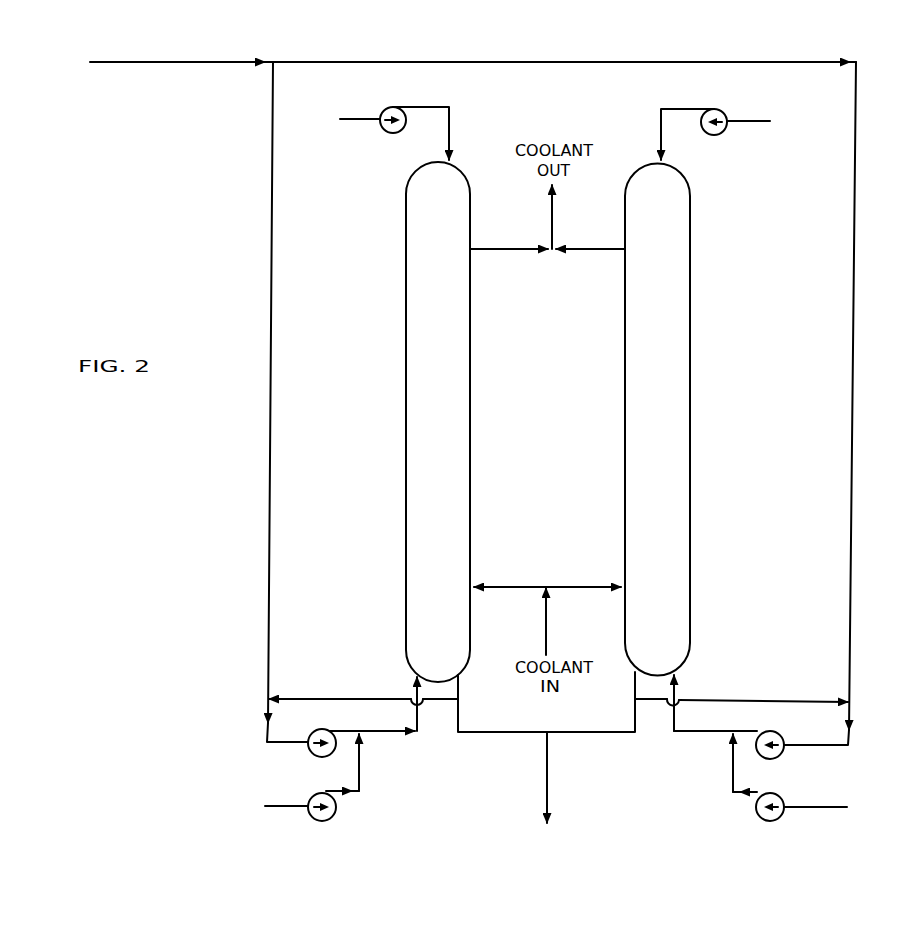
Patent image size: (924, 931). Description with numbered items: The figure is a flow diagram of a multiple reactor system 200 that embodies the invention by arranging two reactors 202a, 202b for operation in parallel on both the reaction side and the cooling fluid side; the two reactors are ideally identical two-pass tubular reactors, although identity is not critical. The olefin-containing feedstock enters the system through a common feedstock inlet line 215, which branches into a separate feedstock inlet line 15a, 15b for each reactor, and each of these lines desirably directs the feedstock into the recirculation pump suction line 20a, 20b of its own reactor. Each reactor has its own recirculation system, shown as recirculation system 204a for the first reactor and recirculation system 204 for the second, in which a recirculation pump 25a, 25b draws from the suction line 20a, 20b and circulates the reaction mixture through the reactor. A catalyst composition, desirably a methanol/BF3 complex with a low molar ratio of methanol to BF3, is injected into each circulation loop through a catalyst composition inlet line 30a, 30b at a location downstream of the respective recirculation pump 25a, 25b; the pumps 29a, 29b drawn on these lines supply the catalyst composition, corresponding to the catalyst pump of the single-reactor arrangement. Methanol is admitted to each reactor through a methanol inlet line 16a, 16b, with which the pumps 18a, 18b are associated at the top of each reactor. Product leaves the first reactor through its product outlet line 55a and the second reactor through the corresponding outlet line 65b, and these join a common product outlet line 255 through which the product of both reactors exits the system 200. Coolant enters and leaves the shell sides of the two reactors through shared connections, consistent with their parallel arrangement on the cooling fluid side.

The multiple reactor system 200 is at (236, 165).
The common feedstock inlet line 215 is at (179, 62).
The feedstock inlet line 15a is at (268, 592).
The feedstock inlet line 15b is at (855, 588).
The methanol inlet line 16a is at (409, 107).
The methanol inlet line 16b is at (686, 108).
The inlet line 18a is at (389, 133).
The inlet line 18b is at (722, 134).
The reactor 202a is at (372, 338).
The reactor 202b is at (718, 336).
The recirculation system 204a is at (365, 674).
The product line 204 is at (779, 668).
The recirculation pump suction line 20a is at (341, 698).
The recirculation pump suction line 20b is at (764, 699).
The product outlet line 55a is at (458, 709).
The bottom inlet pipe 65b is at (635, 712).
The recirculation pump 25a is at (315, 754).
The recirculation pump 25b is at (776, 759).
The pump 29a is at (323, 819).
The pump 29b is at (772, 821).
The catalyst composition inlet line 30a is at (360, 763).
The catalyst composition inlet line 30b is at (733, 757).
The common product outlet line 255 is at (549, 774).